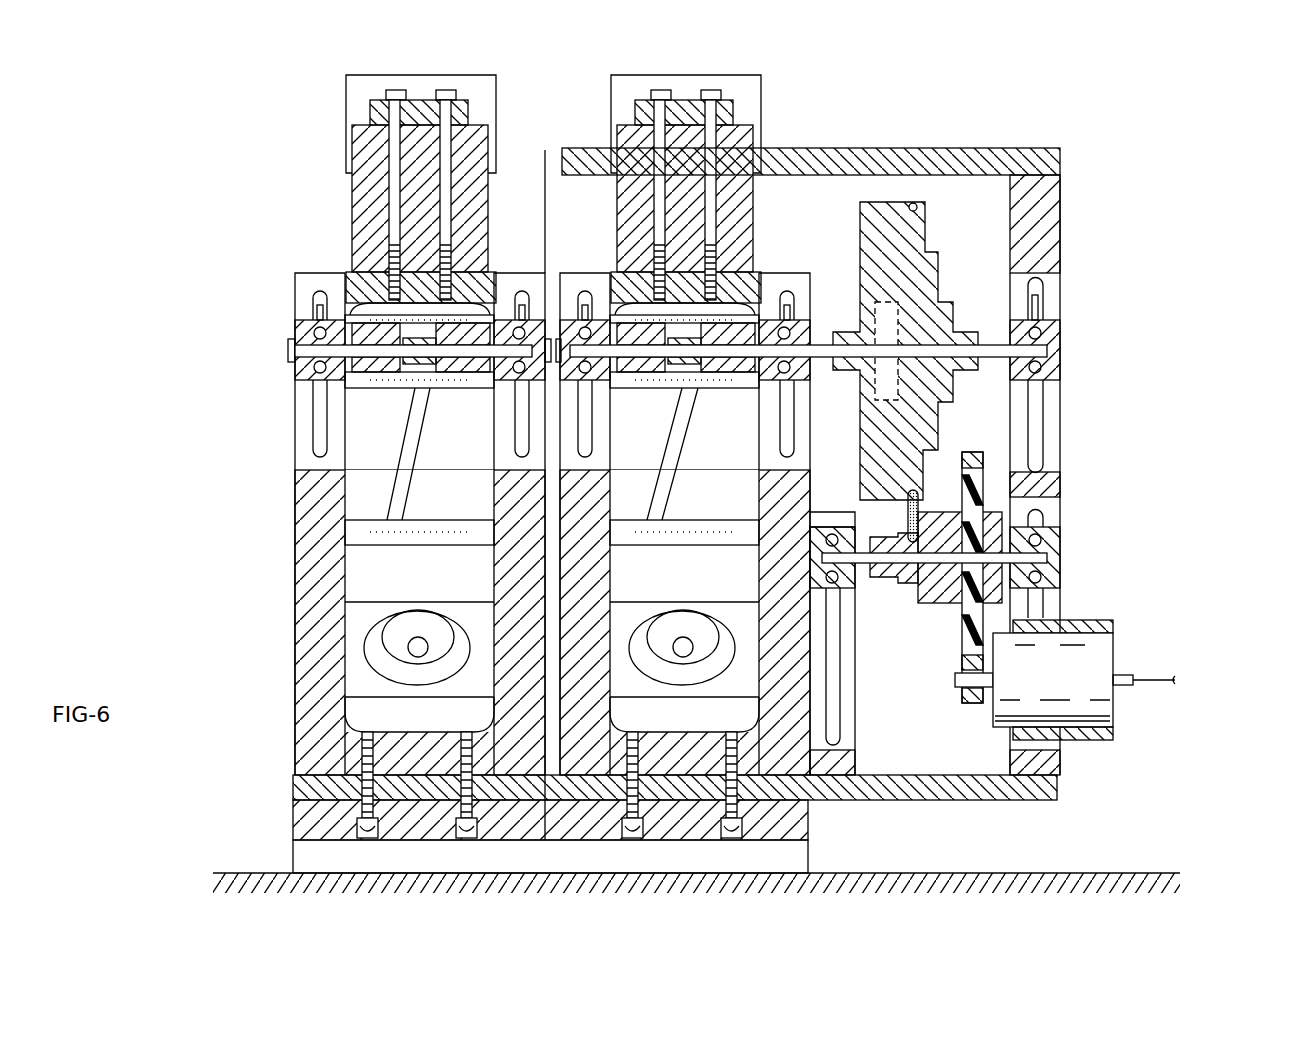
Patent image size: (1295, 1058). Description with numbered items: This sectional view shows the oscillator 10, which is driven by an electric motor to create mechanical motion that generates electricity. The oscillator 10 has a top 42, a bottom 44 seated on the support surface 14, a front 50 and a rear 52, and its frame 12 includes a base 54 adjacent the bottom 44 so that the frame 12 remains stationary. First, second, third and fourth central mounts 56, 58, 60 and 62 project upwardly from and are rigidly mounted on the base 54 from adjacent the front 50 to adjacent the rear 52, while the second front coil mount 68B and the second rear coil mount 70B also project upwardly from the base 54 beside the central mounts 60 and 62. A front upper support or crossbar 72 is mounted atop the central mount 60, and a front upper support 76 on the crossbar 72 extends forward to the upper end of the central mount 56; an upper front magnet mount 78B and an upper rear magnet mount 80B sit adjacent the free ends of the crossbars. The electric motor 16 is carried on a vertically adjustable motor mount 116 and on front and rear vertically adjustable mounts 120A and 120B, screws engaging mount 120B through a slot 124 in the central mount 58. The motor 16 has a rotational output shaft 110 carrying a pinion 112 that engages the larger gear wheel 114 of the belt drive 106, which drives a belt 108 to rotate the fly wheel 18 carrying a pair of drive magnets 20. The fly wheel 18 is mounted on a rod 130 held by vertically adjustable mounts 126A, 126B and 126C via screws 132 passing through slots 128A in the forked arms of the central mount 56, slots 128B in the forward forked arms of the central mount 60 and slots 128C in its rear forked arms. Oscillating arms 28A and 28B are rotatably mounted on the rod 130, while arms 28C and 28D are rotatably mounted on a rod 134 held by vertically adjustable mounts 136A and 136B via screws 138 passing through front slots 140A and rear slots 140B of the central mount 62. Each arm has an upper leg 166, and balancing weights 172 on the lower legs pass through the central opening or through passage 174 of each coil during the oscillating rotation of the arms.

The oscillator 10 is at (1150, 125).
The frame 12 is at (925, 810).
The support surface 14 is at (1105, 878).
The electric motor 16 is at (1103, 652).
The fly wheel 18 is at (862, 200).
The drive magnets 20 is at (890, 330).
The oscillating arm 28A is at (720, 378).
The oscillating arm 28B is at (643, 380).
The oscillating arm 28C is at (455, 378).
The oscillating arm 28D is at (378, 380).
The top 42 is at (745, 55).
The bottom 44 is at (640, 890).
The front 50 is at (1122, 243).
The rear 52 is at (252, 287).
The base 54 is at (300, 818).
The first central mount 56 is at (1061, 200).
The second central mount 58 is at (852, 740).
The third central mount 60 is at (805, 497).
The fourth central mount 62 is at (308, 583).
The second front coil mount 68B is at (748, 680).
The second rear coil mount 70B is at (352, 637).
The front upper support or crossbar 72 is at (423, 100).
The front upper support 76 is at (1000, 148).
The upper front magnet mount 78B is at (748, 90).
The upper rear magnet mount 80B is at (482, 90).
The belt drive 106 is at (1003, 592).
The belt 108 is at (916, 202).
The rotational output shaft 110 is at (956, 679).
The pinion 112 is at (965, 705).
The gear wheel 114 is at (984, 460).
The motor mount 116 is at (1093, 742).
The front vertically adjustable mount 120A is at (1050, 566).
The rear vertically adjustable mount 120B is at (843, 590).
The slot 124 is at (835, 655).
The vertically adjustable mount 126A is at (1050, 362).
The vertically adjustable mount 126B is at (812, 338).
The vertically adjustable mount 126C is at (568, 380).
The slots 128A is at (1047, 296).
The slots 128B is at (792, 310).
The slots 128C is at (586, 450).
The rod 130 is at (990, 345).
The screws 132 is at (583, 325).
The rod 134 is at (300, 352).
The vertically adjustable mount 136A is at (546, 318).
The vertically adjustable mount 136B is at (300, 338).
The screws 138 is at (516, 318).
The front slots 140A is at (520, 432).
The rear slots 140B is at (318, 435).
The upper leg 166 is at (392, 508).
The balancing weights 172 is at (440, 632).
The central opening or through passage 174 is at (372, 640).